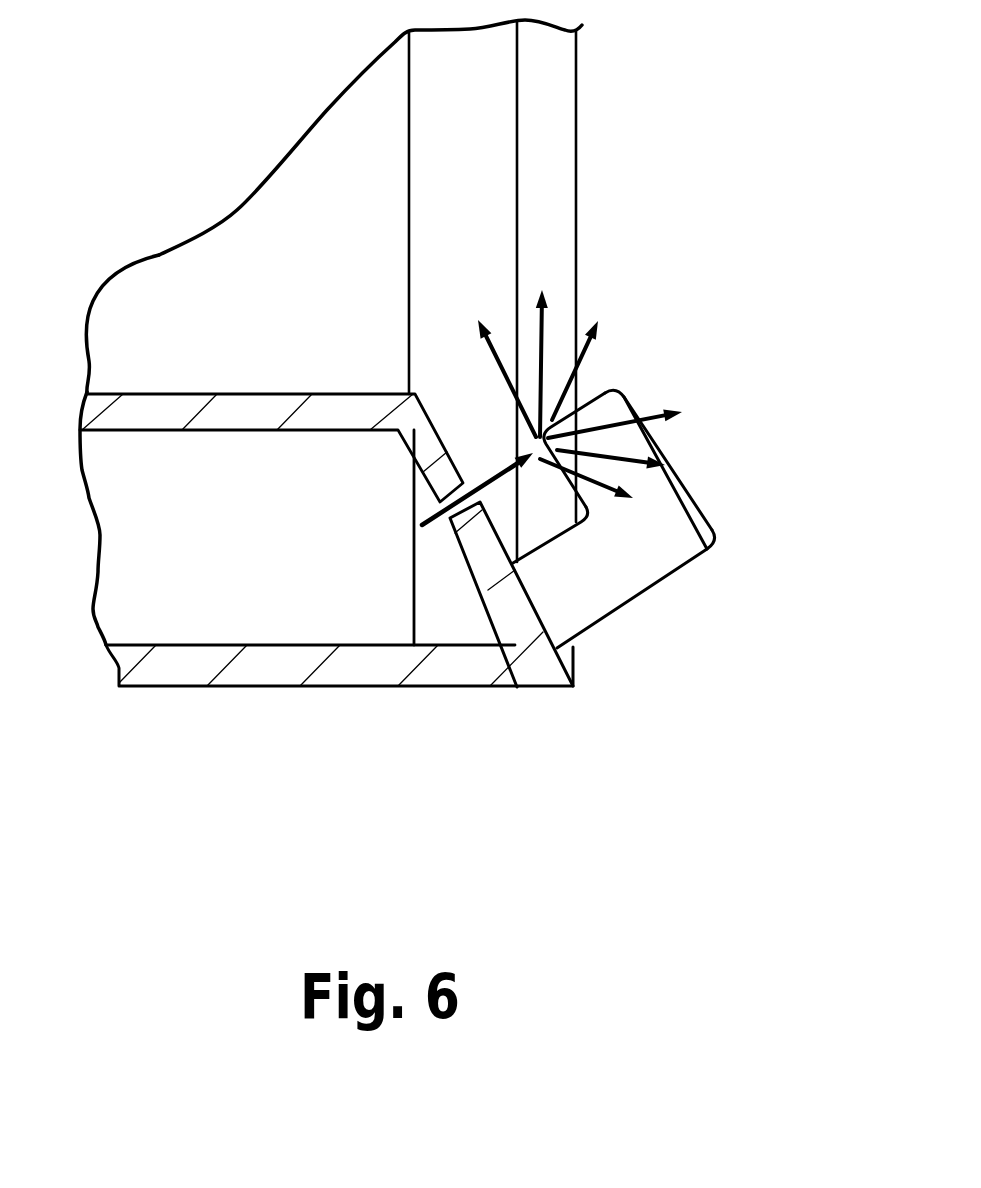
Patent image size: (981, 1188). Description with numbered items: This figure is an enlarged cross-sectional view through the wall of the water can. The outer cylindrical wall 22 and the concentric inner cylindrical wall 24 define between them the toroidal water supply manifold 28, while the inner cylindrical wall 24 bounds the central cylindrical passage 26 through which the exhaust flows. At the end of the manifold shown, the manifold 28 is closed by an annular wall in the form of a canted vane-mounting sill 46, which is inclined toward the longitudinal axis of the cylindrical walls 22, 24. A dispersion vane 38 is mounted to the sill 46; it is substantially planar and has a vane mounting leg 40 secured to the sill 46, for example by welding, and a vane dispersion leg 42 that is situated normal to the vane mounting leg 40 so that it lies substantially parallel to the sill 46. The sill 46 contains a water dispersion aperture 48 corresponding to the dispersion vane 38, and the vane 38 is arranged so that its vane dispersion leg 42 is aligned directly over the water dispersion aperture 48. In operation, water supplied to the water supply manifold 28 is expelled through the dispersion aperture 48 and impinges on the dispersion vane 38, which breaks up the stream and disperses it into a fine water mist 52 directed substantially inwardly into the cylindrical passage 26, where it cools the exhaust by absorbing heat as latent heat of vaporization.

The outer cylindrical wall 22 is at (277, 667).
The inner cylindrical wall 24 is at (131, 407).
The central cylindrical passage 26 is at (317, 301).
The toroidal water supply manifold 28 is at (197, 565).
The dispersion vane 38 is at (693, 505).
The vane mounting leg 40 is at (587, 583).
The vane dispersion leg 42 is at (613, 415).
The canted vane-mounting sill 46 is at (530, 606).
The water dispersion aperture 48 is at (470, 485).
The water mist 52 is at (585, 348).